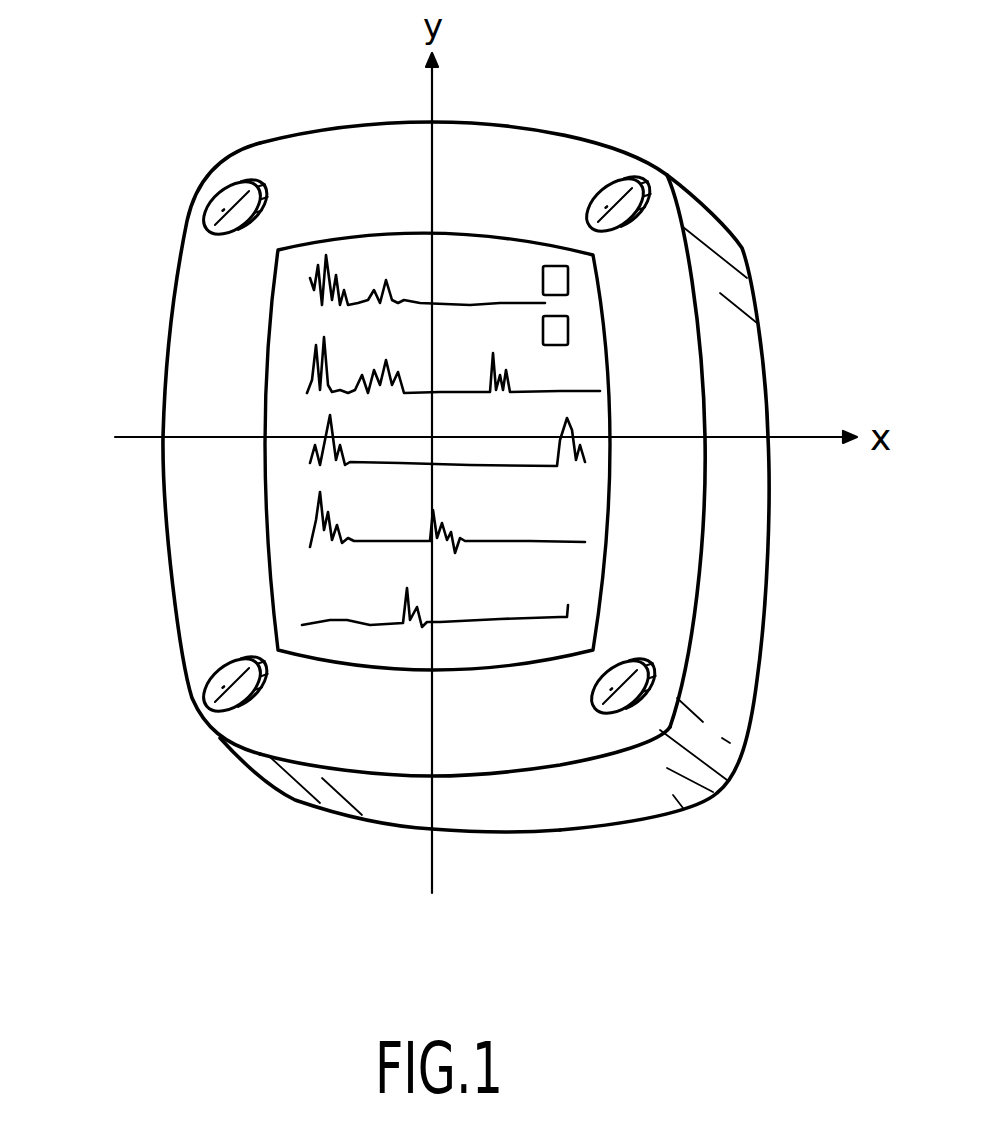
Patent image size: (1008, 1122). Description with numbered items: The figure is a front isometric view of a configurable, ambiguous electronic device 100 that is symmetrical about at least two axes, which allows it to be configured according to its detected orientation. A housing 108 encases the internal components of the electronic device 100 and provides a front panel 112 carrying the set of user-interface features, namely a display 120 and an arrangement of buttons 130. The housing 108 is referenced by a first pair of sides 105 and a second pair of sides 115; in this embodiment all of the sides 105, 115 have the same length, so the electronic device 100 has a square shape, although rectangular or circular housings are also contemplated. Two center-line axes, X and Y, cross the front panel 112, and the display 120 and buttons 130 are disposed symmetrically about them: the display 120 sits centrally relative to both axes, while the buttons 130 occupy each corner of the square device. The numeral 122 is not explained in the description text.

The electronic device 100 is at (164, 810).
The first pair of sides 105 is at (161, 510).
The housing 108 is at (558, 118).
The front panel 112 is at (515, 746).
The second pair of sides 115 is at (292, 137).
The display 120 is at (542, 590).
The bottom housing surface 122 is at (593, 800).
The buttons 130 is at (204, 196).